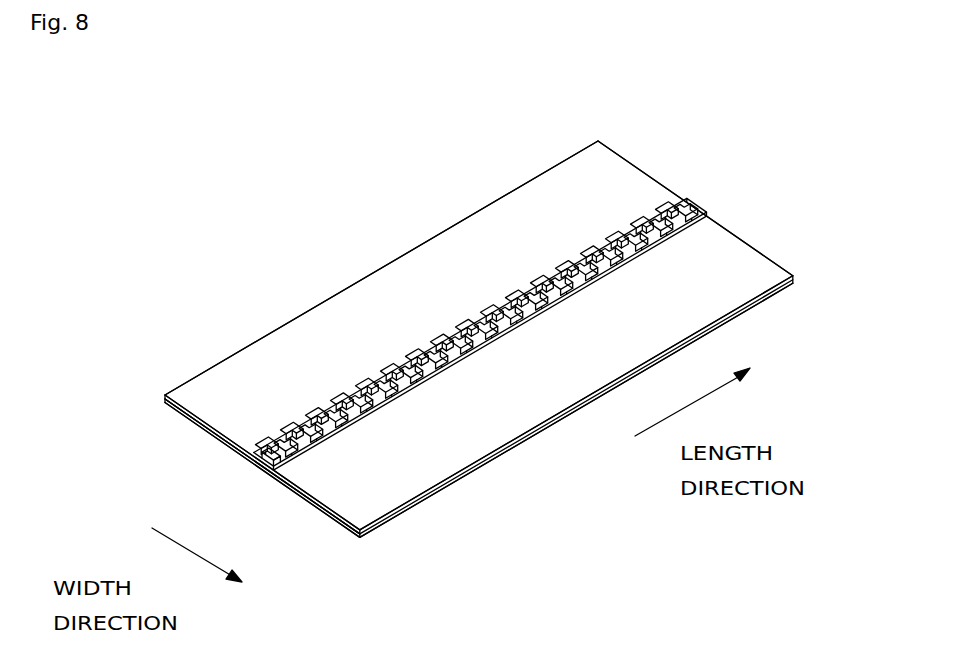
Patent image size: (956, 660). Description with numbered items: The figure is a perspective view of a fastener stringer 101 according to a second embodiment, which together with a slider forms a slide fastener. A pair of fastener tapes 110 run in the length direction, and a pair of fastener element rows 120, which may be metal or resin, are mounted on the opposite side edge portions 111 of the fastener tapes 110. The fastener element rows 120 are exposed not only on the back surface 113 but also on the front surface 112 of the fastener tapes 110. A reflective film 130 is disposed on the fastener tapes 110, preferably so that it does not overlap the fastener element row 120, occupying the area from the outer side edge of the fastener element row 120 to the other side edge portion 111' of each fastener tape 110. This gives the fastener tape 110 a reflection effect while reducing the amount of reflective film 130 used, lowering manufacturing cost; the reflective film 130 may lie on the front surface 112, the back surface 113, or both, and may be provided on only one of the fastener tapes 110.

The fastener stringer 101 is at (141, 256).
The fastener tape 110 is at (166, 404).
The side edge portion 111 is at (480, 327).
The other side edge portion 111' is at (479, 339).
The front surface 112 is at (182, 403).
The back surface 113 is at (183, 418).
The fastener element row 120 is at (243, 440).
The reflective film 130 is at (620, 176).